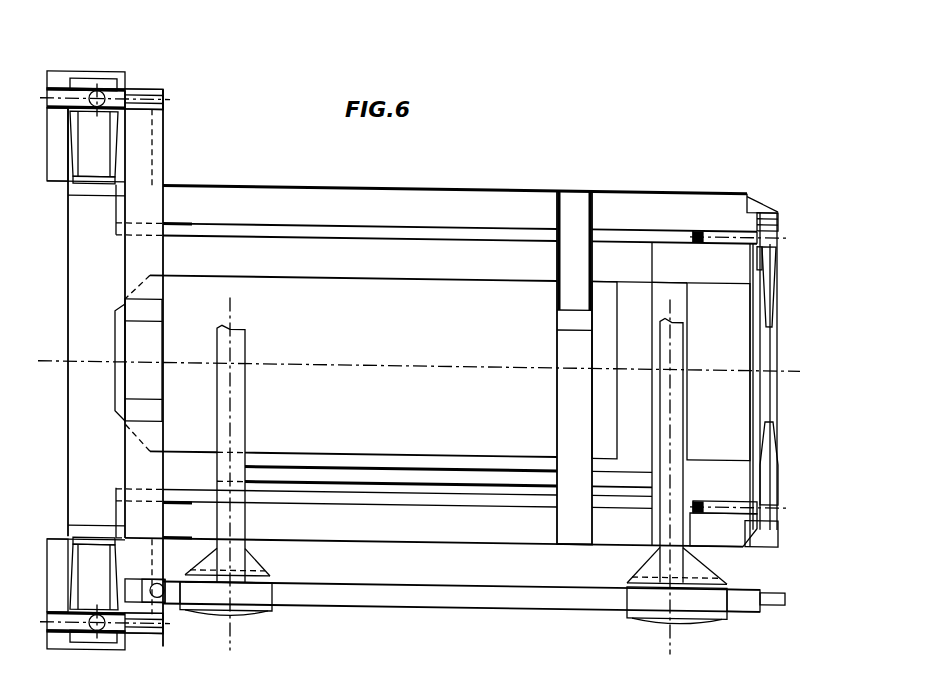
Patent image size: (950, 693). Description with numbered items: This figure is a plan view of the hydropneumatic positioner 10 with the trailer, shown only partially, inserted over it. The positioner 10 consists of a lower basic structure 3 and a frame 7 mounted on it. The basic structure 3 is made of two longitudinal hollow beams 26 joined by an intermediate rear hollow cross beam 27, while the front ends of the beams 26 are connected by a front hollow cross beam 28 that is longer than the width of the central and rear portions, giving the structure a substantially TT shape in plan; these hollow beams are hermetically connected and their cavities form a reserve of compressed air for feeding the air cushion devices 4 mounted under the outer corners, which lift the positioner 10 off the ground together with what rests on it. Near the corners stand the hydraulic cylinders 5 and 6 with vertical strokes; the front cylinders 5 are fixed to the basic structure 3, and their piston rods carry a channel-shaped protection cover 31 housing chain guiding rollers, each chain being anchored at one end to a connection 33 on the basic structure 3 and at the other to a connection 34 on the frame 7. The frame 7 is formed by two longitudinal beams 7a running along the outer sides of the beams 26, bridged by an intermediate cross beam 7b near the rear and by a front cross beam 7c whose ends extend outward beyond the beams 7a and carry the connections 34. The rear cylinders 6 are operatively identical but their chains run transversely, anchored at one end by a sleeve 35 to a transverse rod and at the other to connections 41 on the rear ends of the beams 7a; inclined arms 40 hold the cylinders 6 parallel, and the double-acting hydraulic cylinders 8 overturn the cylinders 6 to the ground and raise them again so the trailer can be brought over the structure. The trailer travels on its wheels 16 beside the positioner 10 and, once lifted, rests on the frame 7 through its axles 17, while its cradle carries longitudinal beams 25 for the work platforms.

The basic structure 3 is at (432, 225).
The air cushion devices 4 is at (70, 165).
The hydraulic cylinders 5 is at (75, 119).
The rear hydraulic cylinders 6 is at (780, 242).
The frame 7 is at (470, 542).
The longitudinal beams 7a is at (225, 191).
The intermediate cross beam 7b is at (565, 440).
The front cross beam 7c is at (150, 288).
The hydraulic cylinders 8 is at (718, 221).
The hydropneumatic positioner 10 is at (472, 296).
The trailer wheels 16 is at (250, 611).
The axles 17 is at (237, 429).
The longitudinal beams 25 is at (515, 600).
The longitudinal hollow beams 26 is at (315, 241).
The intermediate rear hollow cross beam 27 is at (627, 297).
The front hollow cross beam 28 is at (103, 347).
The protection cover 31 is at (132, 97).
The connection 33 is at (62, 93).
The connection 34 is at (150, 102).
The sleeve 35 is at (770, 277).
The inclined arms 40 is at (768, 432).
The connections 41 is at (775, 202).